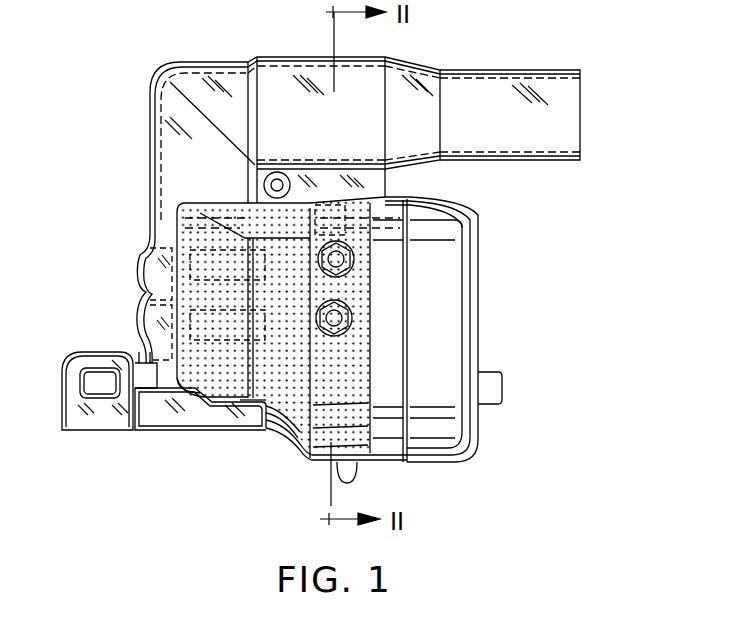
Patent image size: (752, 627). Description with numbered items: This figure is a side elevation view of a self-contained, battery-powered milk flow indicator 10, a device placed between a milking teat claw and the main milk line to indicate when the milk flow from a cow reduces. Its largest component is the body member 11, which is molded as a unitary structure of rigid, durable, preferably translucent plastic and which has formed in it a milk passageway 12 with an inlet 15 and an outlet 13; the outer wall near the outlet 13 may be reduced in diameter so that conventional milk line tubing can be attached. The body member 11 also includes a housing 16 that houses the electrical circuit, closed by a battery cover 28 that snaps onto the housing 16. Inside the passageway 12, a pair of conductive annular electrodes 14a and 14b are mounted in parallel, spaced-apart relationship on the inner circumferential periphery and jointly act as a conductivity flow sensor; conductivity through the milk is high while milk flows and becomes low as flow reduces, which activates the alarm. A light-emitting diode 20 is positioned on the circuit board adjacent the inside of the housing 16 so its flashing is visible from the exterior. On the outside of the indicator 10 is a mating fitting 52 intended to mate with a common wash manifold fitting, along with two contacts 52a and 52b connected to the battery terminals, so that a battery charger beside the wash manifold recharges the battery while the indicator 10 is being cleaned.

The milk flow indicator 10 is at (160, 455).
The body member 11 is at (150, 235).
The milk passageway 12 is at (270, 68).
The outlet 13 is at (195, 432).
The conductive annular electrode 14a is at (137, 294).
The conductive annular electrode 14b is at (138, 285).
The inlet 15 is at (582, 92).
The housing 16 is at (295, 447).
The light-emitting diode 20 is at (365, 195).
The battery cover 28 is at (478, 222).
The mating fitting 52 is at (82, 432).
The contact 52a is at (352, 258).
The contact 52b is at (352, 320).